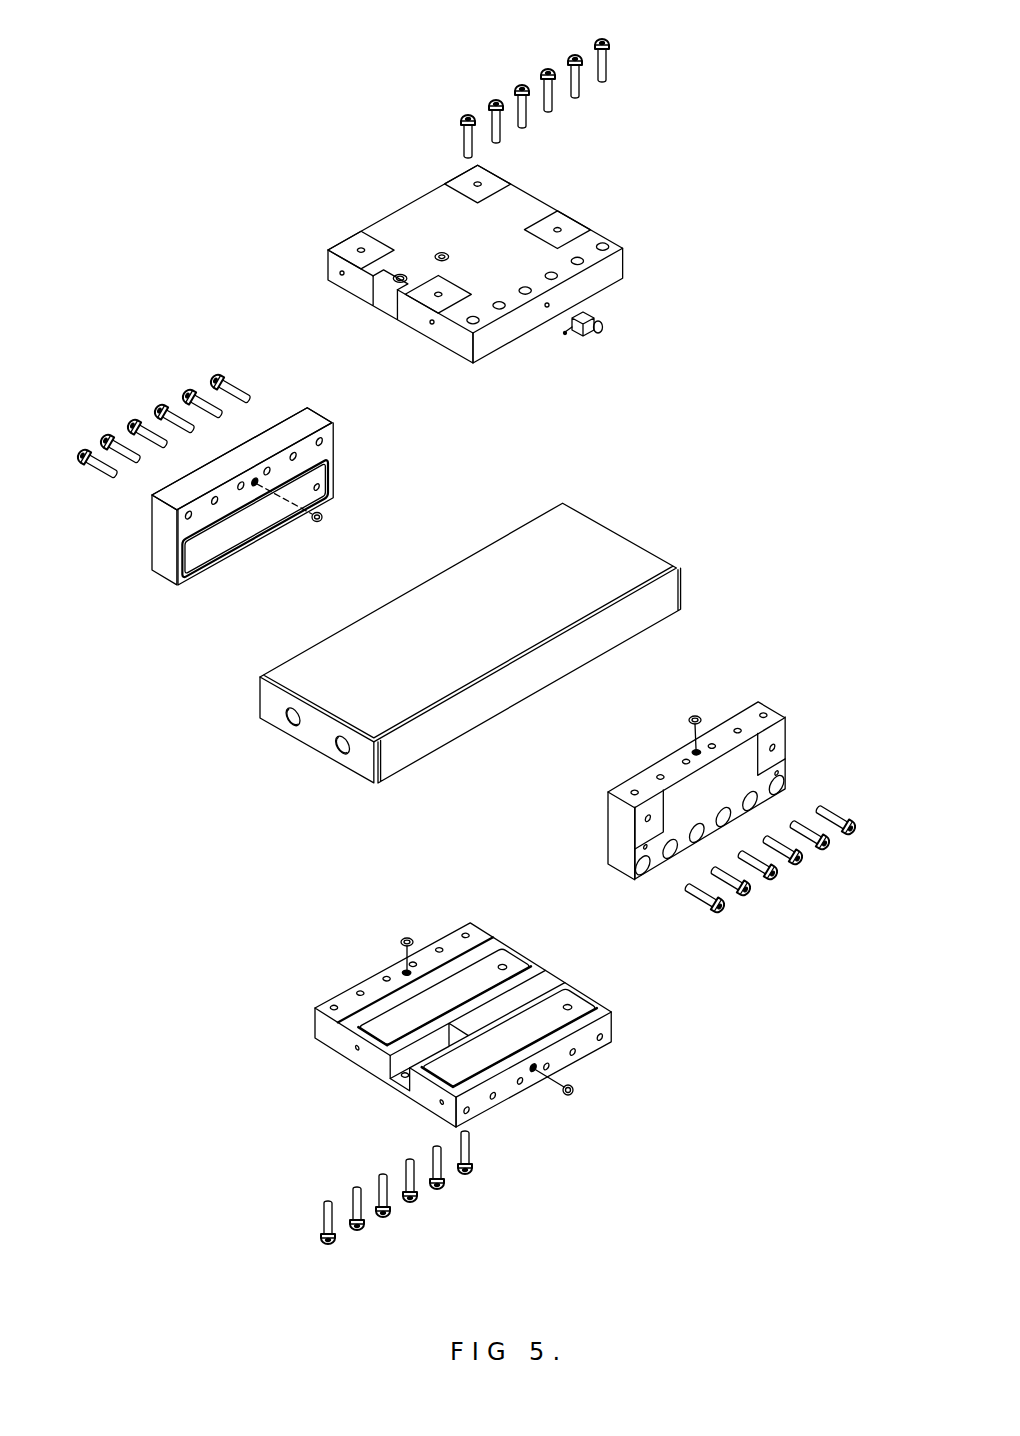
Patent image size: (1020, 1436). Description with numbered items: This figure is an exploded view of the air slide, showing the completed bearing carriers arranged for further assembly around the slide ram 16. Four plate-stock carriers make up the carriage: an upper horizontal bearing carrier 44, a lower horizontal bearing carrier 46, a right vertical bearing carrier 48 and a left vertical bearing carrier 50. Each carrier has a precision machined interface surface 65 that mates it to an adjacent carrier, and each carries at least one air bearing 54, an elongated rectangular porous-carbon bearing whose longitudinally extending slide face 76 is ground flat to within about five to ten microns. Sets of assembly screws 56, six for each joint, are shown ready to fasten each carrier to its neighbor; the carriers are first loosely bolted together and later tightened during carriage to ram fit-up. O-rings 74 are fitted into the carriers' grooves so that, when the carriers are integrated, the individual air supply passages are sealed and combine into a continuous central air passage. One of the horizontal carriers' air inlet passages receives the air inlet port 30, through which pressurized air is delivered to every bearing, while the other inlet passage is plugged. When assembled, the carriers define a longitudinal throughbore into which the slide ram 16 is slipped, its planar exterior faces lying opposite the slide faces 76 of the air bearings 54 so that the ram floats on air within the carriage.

The slide ram 16 is at (470, 643).
The air inlet port 30 is at (602, 333).
The upper horizontal bearing carrier 44 is at (475, 264).
The lower horizontal bearing carrier 46 is at (612, 1032).
The right vertical bearing carrier 48 is at (696, 791).
The left vertical bearing carrier 50 is at (140, 544).
The air bearing 54 is at (389, 773).
The assembly screws 56 is at (543, 60).
The interface surface 65 is at (337, 438).
The O-ring 74 is at (324, 519).
The slide face 76 is at (326, 472).